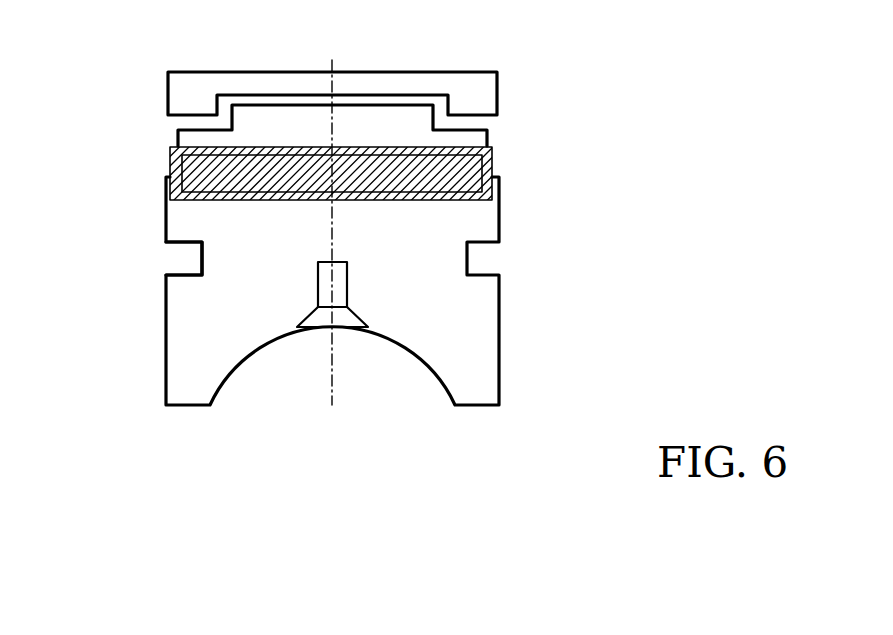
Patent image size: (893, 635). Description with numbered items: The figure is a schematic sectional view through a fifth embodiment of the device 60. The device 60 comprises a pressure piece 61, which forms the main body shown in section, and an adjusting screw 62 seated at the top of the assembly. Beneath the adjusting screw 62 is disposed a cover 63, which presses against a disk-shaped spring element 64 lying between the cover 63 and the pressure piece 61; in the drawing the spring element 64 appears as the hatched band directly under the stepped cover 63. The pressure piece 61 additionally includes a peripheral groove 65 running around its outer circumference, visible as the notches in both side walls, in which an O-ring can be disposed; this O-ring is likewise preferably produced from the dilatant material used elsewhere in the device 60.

The device 60 is at (602, 257).
The pressure piece 61 is at (473, 353).
The adjusting screw 62 is at (470, 100).
The cover 63 is at (198, 140).
The disk-shaped spring element 64 is at (265, 178).
The peripheral groove 65 is at (163, 265).